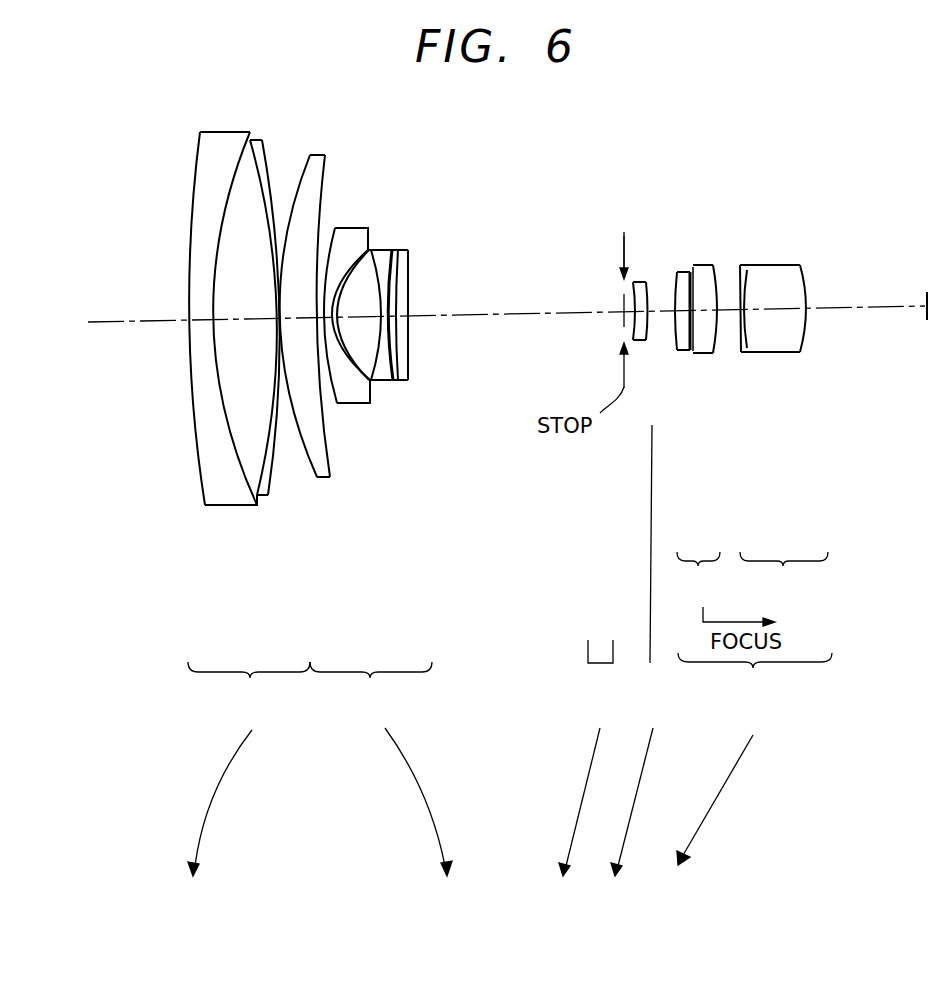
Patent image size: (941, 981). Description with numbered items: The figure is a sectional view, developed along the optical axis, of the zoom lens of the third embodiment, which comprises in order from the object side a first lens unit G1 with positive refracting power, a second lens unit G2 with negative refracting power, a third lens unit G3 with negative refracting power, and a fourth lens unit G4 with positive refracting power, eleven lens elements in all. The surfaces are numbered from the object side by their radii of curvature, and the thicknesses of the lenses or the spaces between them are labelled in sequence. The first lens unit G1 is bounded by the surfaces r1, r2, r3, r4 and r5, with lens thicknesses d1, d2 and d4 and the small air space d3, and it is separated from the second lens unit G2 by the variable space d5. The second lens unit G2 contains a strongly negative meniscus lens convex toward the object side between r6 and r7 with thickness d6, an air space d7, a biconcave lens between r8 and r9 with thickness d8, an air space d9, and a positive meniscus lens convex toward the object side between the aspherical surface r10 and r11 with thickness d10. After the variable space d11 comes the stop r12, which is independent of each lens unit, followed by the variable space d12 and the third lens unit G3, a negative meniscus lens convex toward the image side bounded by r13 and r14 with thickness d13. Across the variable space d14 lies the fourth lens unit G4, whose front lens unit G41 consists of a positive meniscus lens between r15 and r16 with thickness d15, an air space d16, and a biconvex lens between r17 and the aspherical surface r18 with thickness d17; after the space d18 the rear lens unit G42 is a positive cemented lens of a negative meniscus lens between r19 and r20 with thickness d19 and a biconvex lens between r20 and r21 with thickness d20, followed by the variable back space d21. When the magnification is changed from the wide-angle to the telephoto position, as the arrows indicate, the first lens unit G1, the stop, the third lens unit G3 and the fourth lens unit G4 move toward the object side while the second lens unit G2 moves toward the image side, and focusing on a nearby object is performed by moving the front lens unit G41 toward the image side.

The radius of curvature of first lens surface r1 is at (194, 172).
The radius of curvature of second lens surface r2 is at (233, 186).
The radius of curvature of third lens surface r3 is at (258, 170).
The radius of curvature of fourth lens surface r4 is at (272, 212).
The radius of curvature of fifth lens surface r5 is at (295, 200).
The radius of curvature of sixth lens surface r6 is at (320, 215).
The radius of curvature of seventh lens surface r7 is at (330, 250).
The radius of curvature of eighth lens surface r8 is at (357, 262).
The radius of curvature of ninth lens surface r9 is at (366, 252).
The radius of curvature of tenth lens surface r10 is at (398, 277).
The radius of curvature of eleventh lens surface r11 is at (410, 295).
The stop surface r12 is at (624, 240).
The radius of curvature of thirteenth lens surface r13 is at (635, 282).
The radius of curvature of fourteenth lens surface r14 is at (646, 282).
The radius of curvature of fifteenth lens surface r15 is at (679, 272).
The radius of curvature of sixteenth lens surface r16 is at (690, 270).
The radius of curvature of seventeenth lens surface r17 is at (696, 266).
The radius of curvature of eighteenth lens surface r18 is at (713, 266).
The radius of curvature of nineteenth lens surface r19 is at (741, 266).
The radius of curvature of twentieth lens surface r20 is at (748, 278).
The radius of curvature of twenty-first lens surface r21 is at (806, 278).
The thickness of first lens d1 is at (200, 322).
The thickness of second lens d2 is at (278, 322).
The air space after third surface d3 is at (214, 330).
The thickness of fourth lens d4 is at (275, 330).
The variable air space between first and second lens units d5 is at (322, 335).
The thickness of sixth lens d6 is at (326, 335).
The air space after seventh surface d7 is at (333, 335).
The thickness of eighth lens d8 is at (338, 335).
The air space after ninth surface d9 is at (358, 320).
The thickness of tenth lens d10 is at (376, 320).
The variable air space between second lens unit and stop d11 is at (527, 318).
The variable air space between stop and third lens unit d12 is at (639, 342).
The thickness of thirteenth lens d13 is at (644, 344).
The variable air space between third and fourth lens units d14 is at (653, 313).
The thickness of fifteenth lens d15 is at (683, 352).
The air space after sixteenth surface d16 is at (697, 353).
The thickness of seventeenth lens d17 is at (725, 315).
The air space between front and rear lens units d18 is at (742, 352).
The thickness of nineteenth lens d19 is at (750, 352).
The thickness of twentieth lens d20 is at (785, 352).
The variable back space after last surface d21 is at (865, 307).
The first lens unit G1 is at (249, 769).
The second lens unit G2 is at (381, 769).
The third lens unit G3 is at (614, 777).
The fourth lens unit G4 is at (754, 759).
The front lens unit G41 is at (701, 578).
The rear lens unit G42 is at (784, 578).